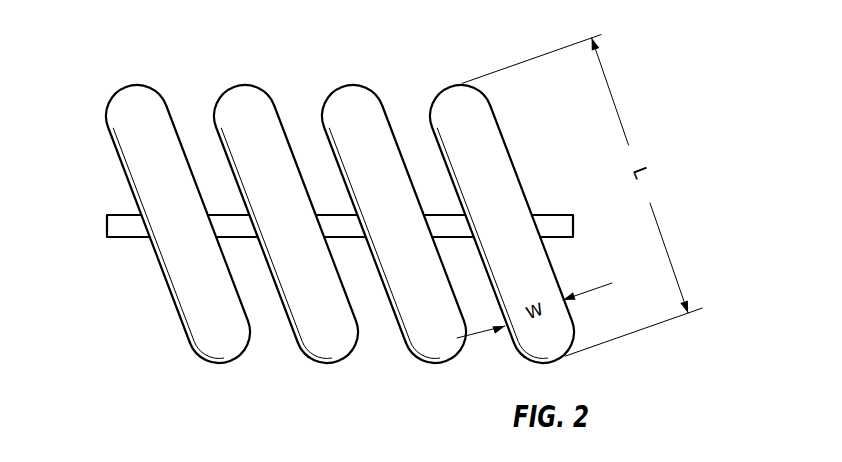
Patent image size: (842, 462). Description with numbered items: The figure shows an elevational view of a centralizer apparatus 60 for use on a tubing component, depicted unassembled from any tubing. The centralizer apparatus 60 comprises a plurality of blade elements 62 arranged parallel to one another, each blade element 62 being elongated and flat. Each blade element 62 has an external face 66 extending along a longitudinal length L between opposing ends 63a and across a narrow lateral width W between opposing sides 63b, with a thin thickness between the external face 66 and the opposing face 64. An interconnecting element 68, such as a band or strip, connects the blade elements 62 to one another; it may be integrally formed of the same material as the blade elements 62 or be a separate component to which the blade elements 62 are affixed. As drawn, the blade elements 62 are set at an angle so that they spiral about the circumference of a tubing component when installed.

The centralizer apparatus 60 is at (64, 129).
The blade element 62 is at (212, 363).
The opposing ends 63a is at (238, 87).
The opposing sides 63b is at (292, 331).
The opposing face 64 is at (427, 342).
The external face 66 is at (345, 112).
The interconnecting element 68 is at (117, 237).